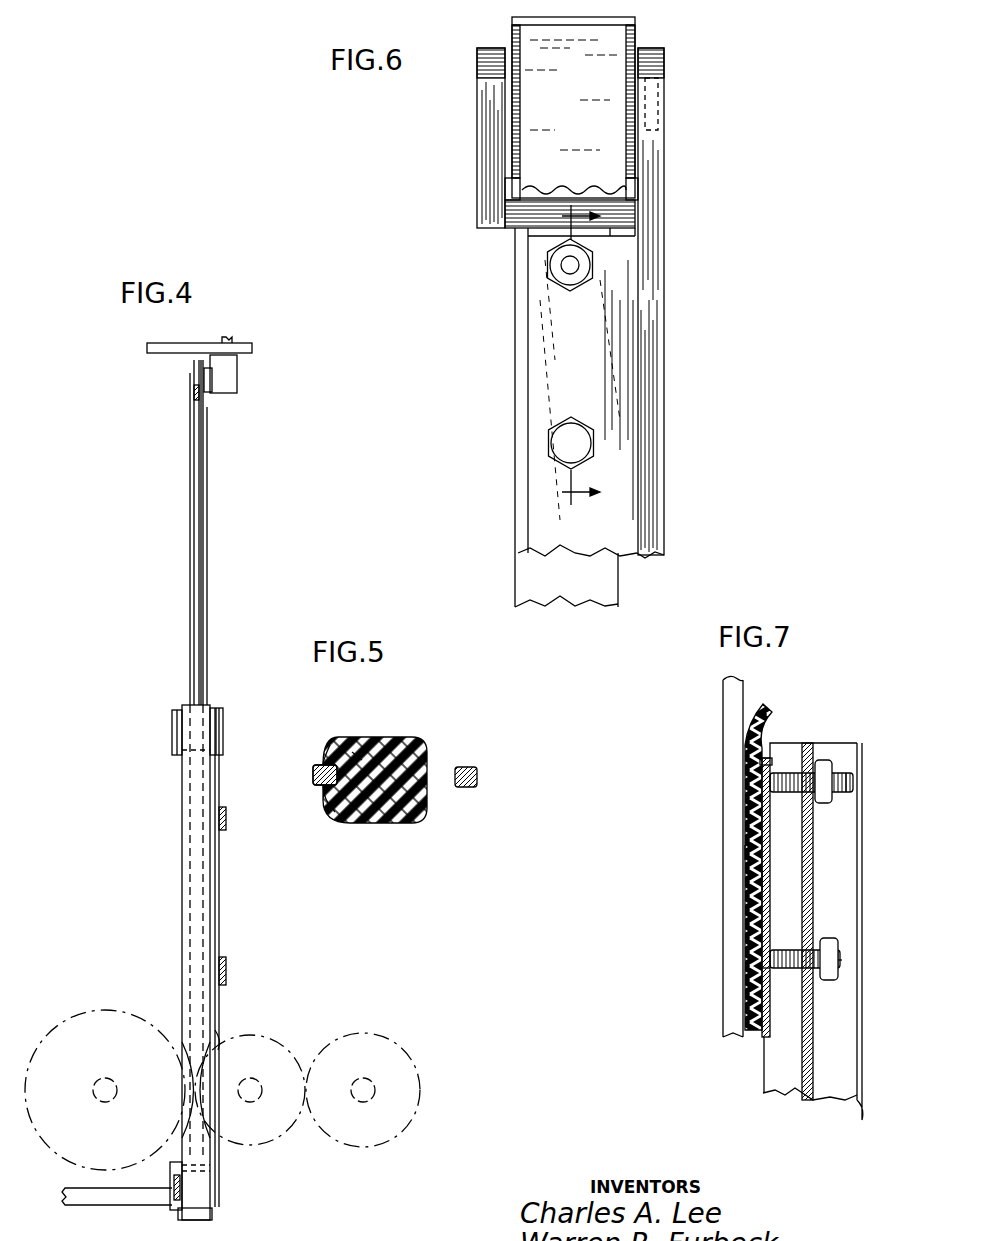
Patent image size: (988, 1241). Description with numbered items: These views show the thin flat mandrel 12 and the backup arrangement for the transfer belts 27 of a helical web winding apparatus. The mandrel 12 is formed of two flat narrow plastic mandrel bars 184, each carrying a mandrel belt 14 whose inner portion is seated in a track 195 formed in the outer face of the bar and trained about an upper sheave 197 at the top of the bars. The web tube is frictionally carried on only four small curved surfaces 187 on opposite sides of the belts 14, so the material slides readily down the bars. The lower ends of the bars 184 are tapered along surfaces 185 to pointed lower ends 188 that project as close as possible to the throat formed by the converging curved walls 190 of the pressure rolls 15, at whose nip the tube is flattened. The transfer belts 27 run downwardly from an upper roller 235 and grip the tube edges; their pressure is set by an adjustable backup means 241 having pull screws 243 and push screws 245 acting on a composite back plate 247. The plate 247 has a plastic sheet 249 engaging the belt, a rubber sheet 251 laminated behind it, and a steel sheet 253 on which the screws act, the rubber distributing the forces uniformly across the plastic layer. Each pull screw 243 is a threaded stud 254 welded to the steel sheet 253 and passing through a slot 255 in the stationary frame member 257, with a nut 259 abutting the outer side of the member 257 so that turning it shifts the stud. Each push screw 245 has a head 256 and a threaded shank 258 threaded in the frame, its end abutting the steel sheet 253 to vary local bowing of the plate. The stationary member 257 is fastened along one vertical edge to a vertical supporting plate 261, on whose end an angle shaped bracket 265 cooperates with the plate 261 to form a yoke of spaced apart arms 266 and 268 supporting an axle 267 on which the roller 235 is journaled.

In FIG. 4, the mandrel 12 is at (230, 568).
In FIG. 4, the mandrel belts 14 is at (197, 500).
In FIG. 5, the mandrel belts 14 is at (470, 767).
In FIG. 4, the pressure rolls 15 is at (97, 1012).
In FIG. 7, the transfer belts 27 is at (733, 708).
In FIG. 4, the mandrel bars 184 is at (210, 465).
In FIG. 5, the mandrel bars 184 is at (428, 745).
In FIG. 4, the tapered surfaces 185 is at (198, 940).
In FIG. 5, the curved surfaces 187 is at (338, 745).
In FIG. 4, the lower ends 188 is at (222, 1030).
In FIG. 4, the converging curved walls 190 is at (178, 1045).
In FIG. 5, the tracks 195 is at (355, 752).
In FIG. 4, the upper sheave 197 is at (214, 395).
In FIG. 6, the upper roller 235 is at (632, 38).
In FIG. 6, the adjustable backup means 241 is at (610, 445).
In FIG. 7, the adjustable backup means 241 is at (828, 880).
In FIG. 6, the pull screws 243 is at (600, 262).
In FIG. 7, the pull screws 243 is at (850, 766).
In FIG. 6, the push screws 245 is at (615, 410).
In FIG. 7, the push screws 245 is at (832, 990).
In FIG. 7, the composite back plate 247 is at (778, 841).
In FIG. 7, the plastic sheet 249 is at (745, 824).
In FIG. 7, the rubber sheet 251 is at (745, 853).
In FIG. 7, the steel sheet 253 is at (760, 880).
In FIG. 6, the threaded stud 254 is at (565, 267).
In FIG. 7, the threaded stud 254 is at (750, 785).
In FIG. 7, the slot 255 is at (807, 745).
In FIG. 6, the head 256 is at (548, 442).
In FIG. 7, the head 256 is at (830, 942).
In FIG. 6, the stationary frame member 257 is at (620, 355).
In FIG. 7, the stationary frame member 257 is at (805, 1075).
In FIG. 7, the threaded shank 258 is at (765, 976).
In FIG. 6, the nut 259 is at (587, 292).
In FIG. 7, the nut 259 is at (815, 801).
In FIG. 6, the vertical supporting plate 261 is at (648, 505).
In FIG. 7, the vertical supporting plate 261 is at (835, 1085).
In FIG. 6, the angle shaped bracket 265 is at (515, 222).
In FIG. 6, the yoke arm 266 is at (485, 140).
In FIG. 6, the axle 267 is at (632, 82).
In FIG. 6, the yoke arm 268 is at (655, 130).